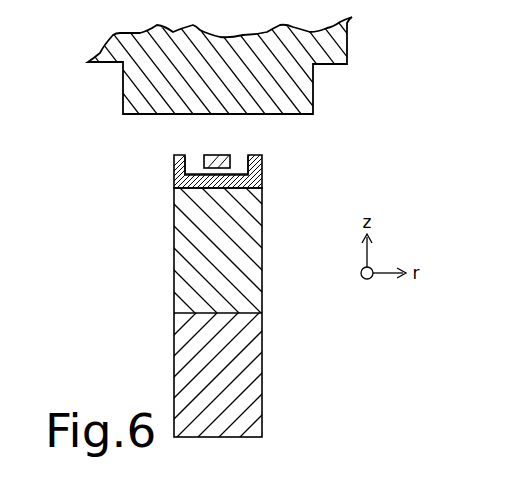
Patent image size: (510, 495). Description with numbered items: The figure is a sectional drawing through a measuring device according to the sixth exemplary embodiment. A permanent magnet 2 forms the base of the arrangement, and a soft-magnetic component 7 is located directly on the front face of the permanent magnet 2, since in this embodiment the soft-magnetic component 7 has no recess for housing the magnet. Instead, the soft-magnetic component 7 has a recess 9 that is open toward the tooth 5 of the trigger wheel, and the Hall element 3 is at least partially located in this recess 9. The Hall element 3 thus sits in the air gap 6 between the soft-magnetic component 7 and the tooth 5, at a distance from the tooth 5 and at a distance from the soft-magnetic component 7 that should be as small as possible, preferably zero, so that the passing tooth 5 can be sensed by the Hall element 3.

The permanent magnet 2 is at (180, 243).
The Hall element 3 is at (229, 152).
The tooth 5 is at (306, 88).
The air gap 6 is at (190, 142).
The soft-magnetic component 7 is at (175, 169).
The recess 9 is at (195, 167).